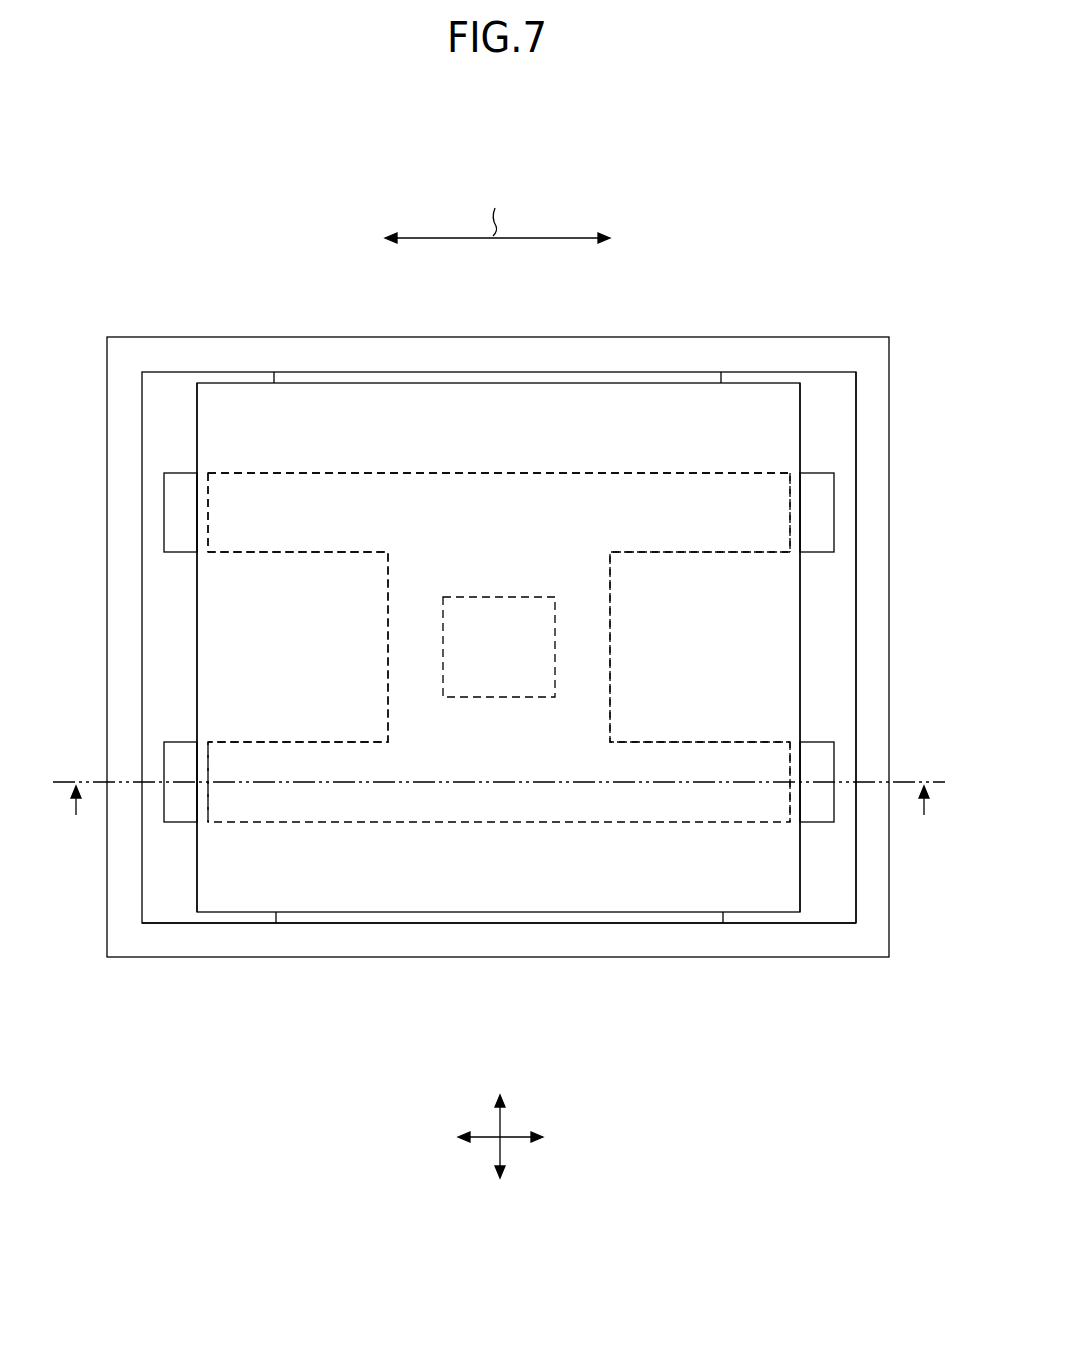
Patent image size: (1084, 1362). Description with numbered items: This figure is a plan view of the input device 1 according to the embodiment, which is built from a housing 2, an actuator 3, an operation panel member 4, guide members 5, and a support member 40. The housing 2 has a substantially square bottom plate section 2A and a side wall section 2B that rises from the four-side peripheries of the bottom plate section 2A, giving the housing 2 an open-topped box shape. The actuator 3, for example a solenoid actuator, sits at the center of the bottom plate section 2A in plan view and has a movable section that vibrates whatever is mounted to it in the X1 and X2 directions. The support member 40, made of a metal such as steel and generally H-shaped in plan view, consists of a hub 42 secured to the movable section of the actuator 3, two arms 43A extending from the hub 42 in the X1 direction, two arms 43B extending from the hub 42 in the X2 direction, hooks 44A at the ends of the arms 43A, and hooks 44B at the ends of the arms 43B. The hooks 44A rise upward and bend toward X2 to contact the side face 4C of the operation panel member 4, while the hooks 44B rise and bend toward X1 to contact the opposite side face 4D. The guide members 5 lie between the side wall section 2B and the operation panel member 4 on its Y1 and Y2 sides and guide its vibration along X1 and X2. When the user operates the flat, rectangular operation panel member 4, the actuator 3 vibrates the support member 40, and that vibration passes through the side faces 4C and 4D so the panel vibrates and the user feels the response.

The input device 1 is at (852, 228).
The housing 2 is at (132, 964).
The bottom plate section 2A is at (835, 877).
The side wall section 2B is at (592, 350).
The actuator 3 is at (532, 647).
The operation panel member 4 is at (765, 607).
The side face 4C is at (196, 601).
The side face 4D is at (800, 572).
The guide members 5 is at (372, 380).
The support member 40 is at (470, 838).
The hub 42 is at (500, 540).
The arms 43A is at (300, 495).
The arms 43B is at (693, 495).
The hooks 44A is at (203, 493).
The hooks 44B is at (795, 495).